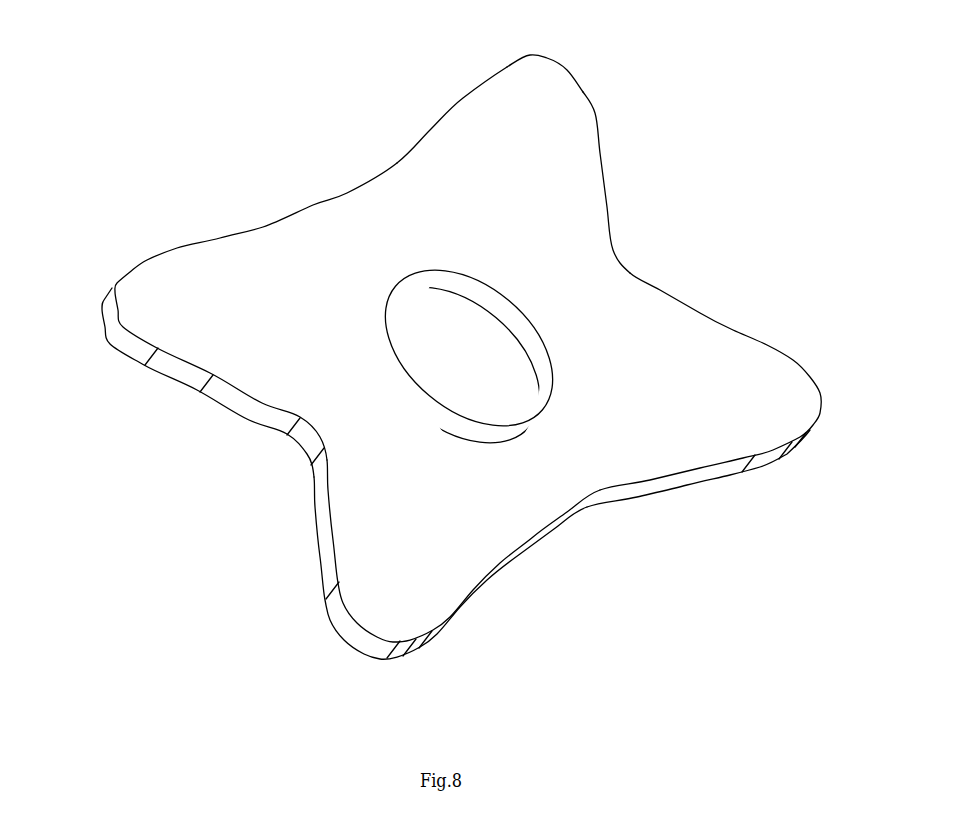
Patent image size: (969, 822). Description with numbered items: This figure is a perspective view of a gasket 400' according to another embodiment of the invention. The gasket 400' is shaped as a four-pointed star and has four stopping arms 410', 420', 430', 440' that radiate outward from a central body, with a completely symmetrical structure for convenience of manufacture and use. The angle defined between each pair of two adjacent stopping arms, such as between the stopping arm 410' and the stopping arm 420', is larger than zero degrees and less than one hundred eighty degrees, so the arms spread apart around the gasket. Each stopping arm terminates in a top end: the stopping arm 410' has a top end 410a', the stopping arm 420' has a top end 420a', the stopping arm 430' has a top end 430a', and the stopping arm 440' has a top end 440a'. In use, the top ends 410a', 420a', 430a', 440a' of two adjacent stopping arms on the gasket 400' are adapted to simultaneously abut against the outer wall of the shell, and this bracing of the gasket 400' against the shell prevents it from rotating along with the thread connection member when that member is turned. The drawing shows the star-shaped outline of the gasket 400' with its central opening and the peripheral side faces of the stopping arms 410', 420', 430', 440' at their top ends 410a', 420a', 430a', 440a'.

The gasket 400' is at (476, 361).
The stopping arm 410' is at (207, 327).
The top end 410a' is at (171, 382).
The stopping arm 420' is at (551, 138).
The top end 420a' is at (598, 47).
The stopping arm 430' is at (761, 382).
The top end 430a' is at (761, 447).
The stopping arm 440' is at (428, 589).
The top end 440a' is at (422, 598).